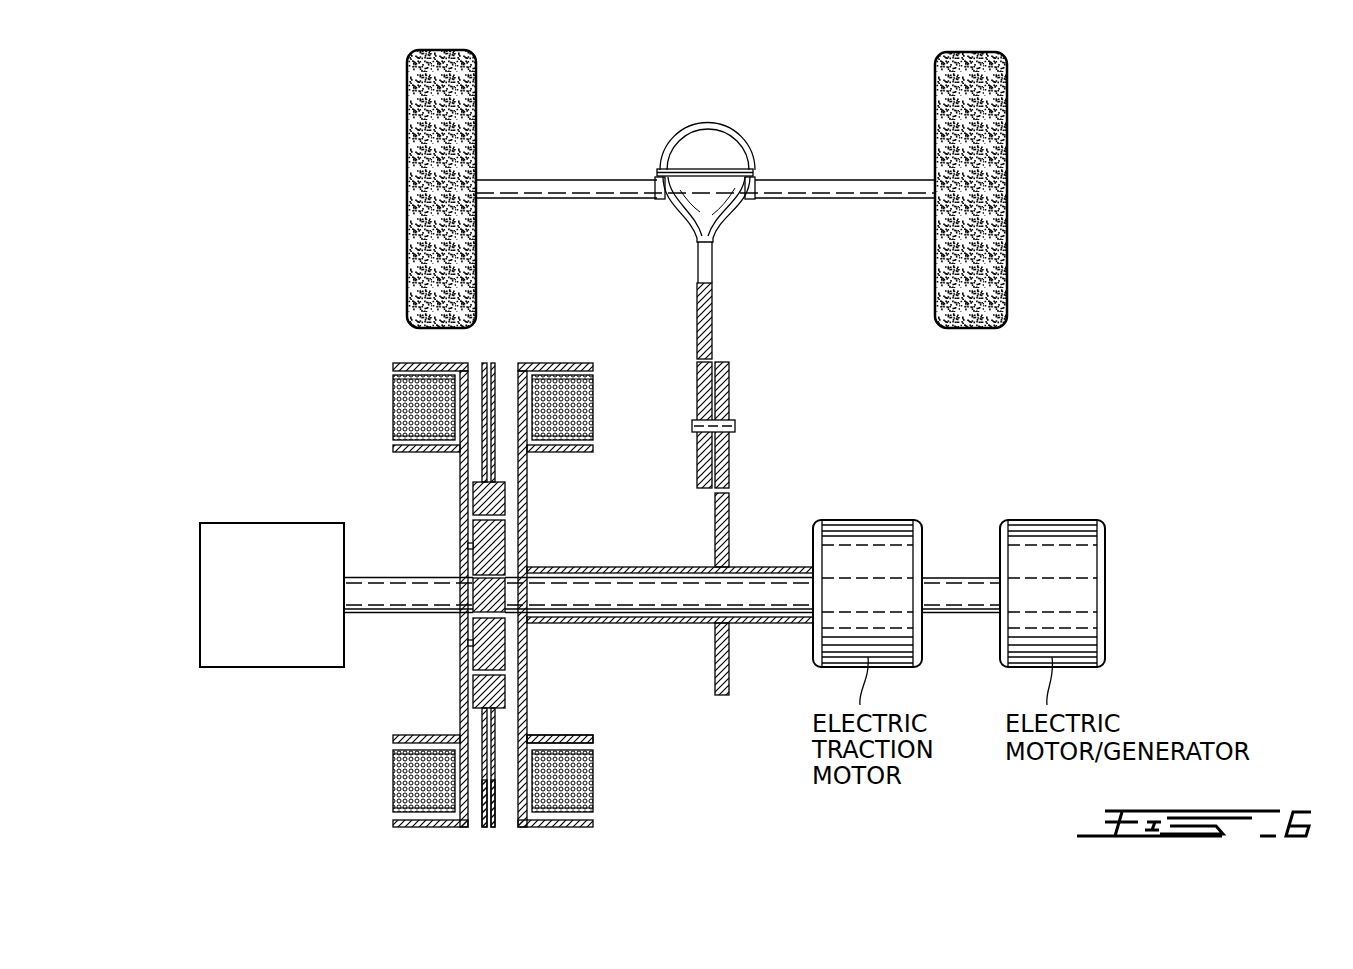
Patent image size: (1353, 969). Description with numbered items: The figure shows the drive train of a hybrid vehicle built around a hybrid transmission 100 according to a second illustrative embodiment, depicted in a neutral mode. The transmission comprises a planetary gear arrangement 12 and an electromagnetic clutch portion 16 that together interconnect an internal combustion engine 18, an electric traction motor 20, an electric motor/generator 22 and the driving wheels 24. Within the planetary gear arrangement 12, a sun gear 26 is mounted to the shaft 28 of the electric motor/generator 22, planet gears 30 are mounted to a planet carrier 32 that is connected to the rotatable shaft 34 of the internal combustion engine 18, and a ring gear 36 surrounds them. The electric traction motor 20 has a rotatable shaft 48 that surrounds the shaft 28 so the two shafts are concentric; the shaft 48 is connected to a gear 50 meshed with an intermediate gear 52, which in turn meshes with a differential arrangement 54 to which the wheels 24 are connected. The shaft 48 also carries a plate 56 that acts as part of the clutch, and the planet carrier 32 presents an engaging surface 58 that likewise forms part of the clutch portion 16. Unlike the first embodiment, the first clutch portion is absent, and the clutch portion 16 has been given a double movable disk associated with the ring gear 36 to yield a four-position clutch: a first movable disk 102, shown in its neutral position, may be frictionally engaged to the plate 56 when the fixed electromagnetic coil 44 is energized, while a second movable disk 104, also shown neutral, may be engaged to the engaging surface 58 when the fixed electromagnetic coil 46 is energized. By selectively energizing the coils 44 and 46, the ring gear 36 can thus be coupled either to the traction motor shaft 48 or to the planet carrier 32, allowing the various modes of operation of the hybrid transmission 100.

The planetary gear arrangement 12 is at (468, 724).
The second electromagnetic clutch portion 16 is at (600, 778).
The internal combustion engine 18 is at (238, 550).
The electric traction motor 20 is at (877, 540).
The electric motor/generator 22 is at (1050, 540).
The driving wheels 24 is at (422, 104).
The sun gear 26 is at (470, 593).
The shaft 28 is at (962, 590).
The planet gears 30 is at (480, 512).
The planet carrier 32 is at (462, 528).
The rotatable shaft 34 is at (396, 596).
The ring gear 36 is at (497, 482).
The electromagnetic coil 44 is at (585, 798).
The electromagnetic coil 46 is at (415, 780).
The rotatable shaft 48 is at (770, 565).
The gear 50 is at (728, 512).
The intermediate gear 52 is at (724, 380).
The differential arrangement 54 is at (707, 192).
The plate 56 is at (519, 380).
The engaging surface 58 is at (465, 380).
The hybrid transmission 100 is at (470, 838).
The first movable disk 102 is at (497, 822).
The second movable disk 104 is at (486, 830).